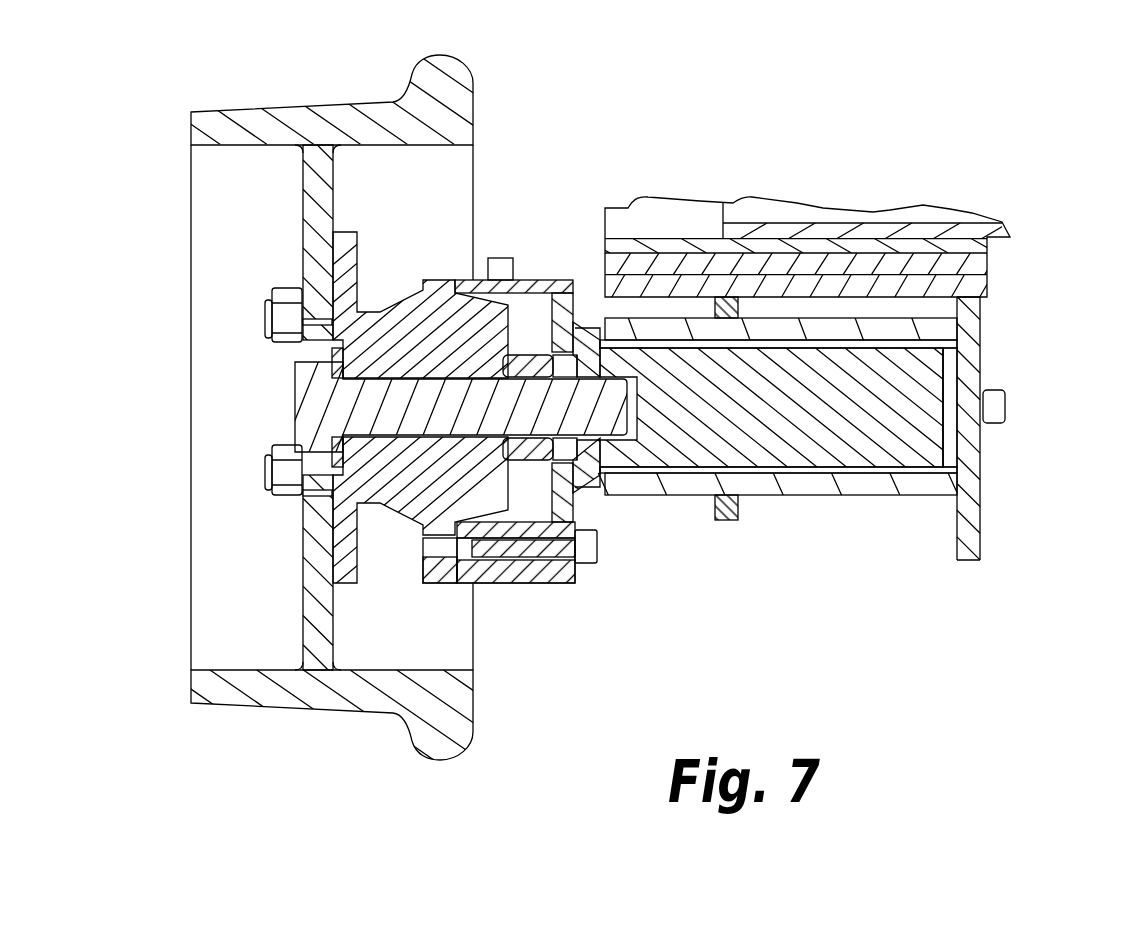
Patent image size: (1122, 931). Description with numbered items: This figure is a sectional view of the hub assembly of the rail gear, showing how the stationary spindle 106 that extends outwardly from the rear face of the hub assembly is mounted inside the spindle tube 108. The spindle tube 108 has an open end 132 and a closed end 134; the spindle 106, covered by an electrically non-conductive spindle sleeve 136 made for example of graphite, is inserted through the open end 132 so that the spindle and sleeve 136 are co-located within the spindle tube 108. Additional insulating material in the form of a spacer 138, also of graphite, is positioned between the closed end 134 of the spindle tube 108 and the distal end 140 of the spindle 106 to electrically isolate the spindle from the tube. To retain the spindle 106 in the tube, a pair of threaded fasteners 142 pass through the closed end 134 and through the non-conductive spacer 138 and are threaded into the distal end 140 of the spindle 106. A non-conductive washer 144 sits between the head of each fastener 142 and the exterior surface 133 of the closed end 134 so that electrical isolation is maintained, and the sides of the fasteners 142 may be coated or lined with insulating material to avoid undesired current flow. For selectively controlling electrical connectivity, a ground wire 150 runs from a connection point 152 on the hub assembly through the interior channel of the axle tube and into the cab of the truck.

The spindle 106 is at (763, 447).
The spindle tube 108 is at (653, 485).
The open end 132 is at (604, 318).
The exterior surface 133 is at (982, 532).
The closed end 134 is at (971, 437).
The spindle sleeve 136 is at (818, 467).
The spacer 138 is at (951, 366).
The distal end 140 is at (943, 403).
The threaded fasteners 142 is at (1008, 412).
The non-conductive washer 144 is at (980, 381).
The ground wire 150 is at (507, 258).
The connection point 152 is at (480, 275).